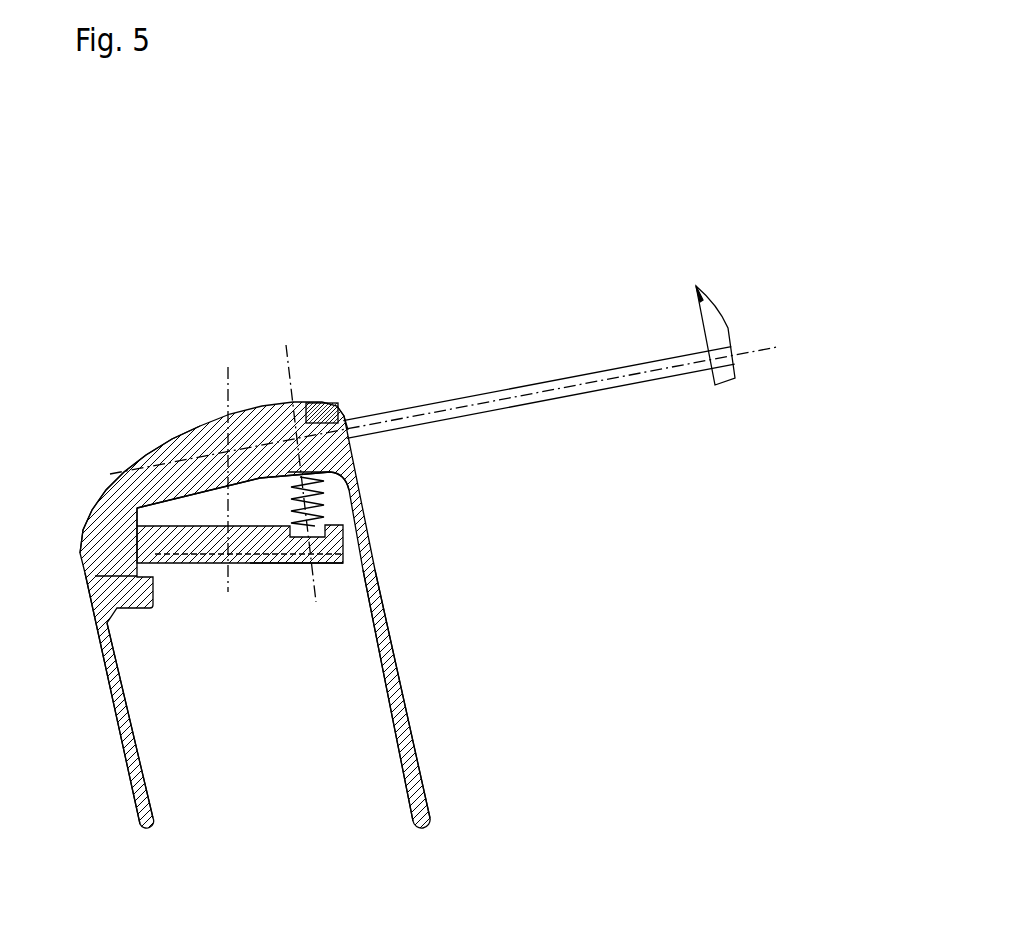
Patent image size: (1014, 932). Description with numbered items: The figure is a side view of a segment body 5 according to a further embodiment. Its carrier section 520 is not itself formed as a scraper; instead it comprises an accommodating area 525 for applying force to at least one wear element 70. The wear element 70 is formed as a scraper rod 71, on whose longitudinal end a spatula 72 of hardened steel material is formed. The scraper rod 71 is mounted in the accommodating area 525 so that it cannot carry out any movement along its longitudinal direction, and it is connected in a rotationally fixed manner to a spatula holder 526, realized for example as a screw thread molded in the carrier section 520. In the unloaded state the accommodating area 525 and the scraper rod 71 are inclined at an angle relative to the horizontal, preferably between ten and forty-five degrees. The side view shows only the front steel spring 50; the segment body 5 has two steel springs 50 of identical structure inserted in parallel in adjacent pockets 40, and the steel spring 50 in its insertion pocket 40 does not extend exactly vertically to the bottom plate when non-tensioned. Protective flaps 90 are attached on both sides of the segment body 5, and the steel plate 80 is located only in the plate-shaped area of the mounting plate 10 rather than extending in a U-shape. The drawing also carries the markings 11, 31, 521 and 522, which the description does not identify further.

The segment body 5 is at (645, 131).
The mounting plate 10 is at (243, 564).
The plate contact surface 11 is at (304, 572).
The inner wall surface 31 is at (142, 515).
The insertion pocket 40 is at (324, 456).
The steel spring 50 is at (322, 500).
The wear element 70 is at (549, 406).
The scraper rod 71 is at (545, 398).
The spatula 72 is at (723, 370).
The steel plate 80 is at (183, 564).
The protective flap 90 is at (130, 721).
The carrier section 520 is at (132, 478).
The curved outer wall 521 is at (93, 508).
The inclined surface 522 is at (258, 486).
The accommodating area 525 is at (340, 414).
The spatula holder 526 is at (243, 420).